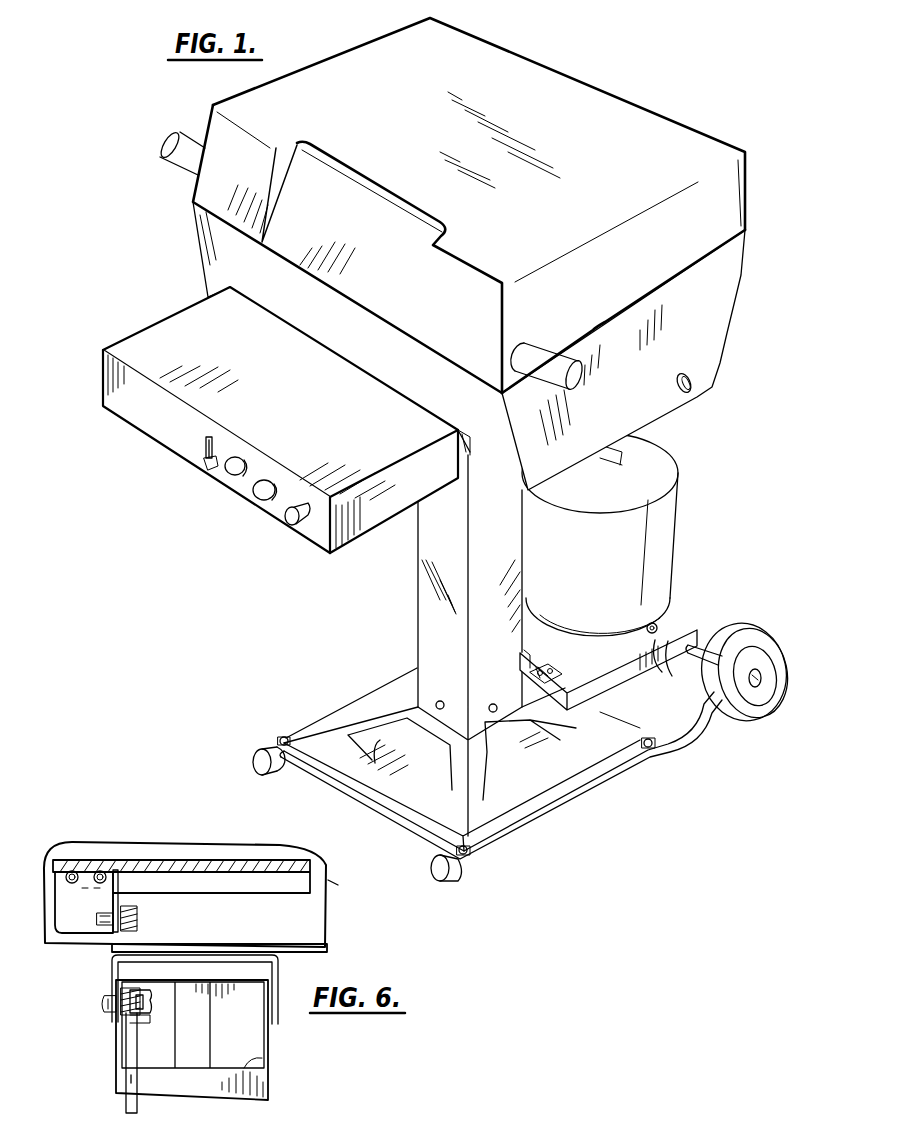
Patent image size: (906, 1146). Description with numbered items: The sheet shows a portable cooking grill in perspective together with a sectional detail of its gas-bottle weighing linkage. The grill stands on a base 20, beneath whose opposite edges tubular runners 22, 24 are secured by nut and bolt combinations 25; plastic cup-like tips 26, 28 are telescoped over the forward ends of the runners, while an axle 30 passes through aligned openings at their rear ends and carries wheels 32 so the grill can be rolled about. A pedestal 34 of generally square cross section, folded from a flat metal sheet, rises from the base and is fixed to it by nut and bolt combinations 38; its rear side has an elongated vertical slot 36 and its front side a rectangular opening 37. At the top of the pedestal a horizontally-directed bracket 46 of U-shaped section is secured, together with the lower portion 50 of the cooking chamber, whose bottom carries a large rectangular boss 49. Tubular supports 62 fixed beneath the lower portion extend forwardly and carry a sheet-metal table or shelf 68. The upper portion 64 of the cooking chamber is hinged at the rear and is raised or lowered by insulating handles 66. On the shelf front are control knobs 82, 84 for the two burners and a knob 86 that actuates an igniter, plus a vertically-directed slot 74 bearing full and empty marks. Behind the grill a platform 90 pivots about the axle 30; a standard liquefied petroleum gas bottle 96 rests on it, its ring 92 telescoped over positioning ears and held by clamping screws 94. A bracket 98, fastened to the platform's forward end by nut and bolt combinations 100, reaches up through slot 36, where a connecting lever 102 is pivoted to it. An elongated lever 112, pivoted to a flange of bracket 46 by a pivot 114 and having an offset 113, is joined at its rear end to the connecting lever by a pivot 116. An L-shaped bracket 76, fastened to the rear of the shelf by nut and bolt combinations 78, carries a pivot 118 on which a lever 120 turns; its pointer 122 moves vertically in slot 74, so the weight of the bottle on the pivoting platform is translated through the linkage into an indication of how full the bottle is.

In FIG. 1, the base 20 is at (540, 790).
In FIG. 1, the runner 22 is at (283, 773).
In FIG. 1, the runner 24 is at (515, 848).
In FIG. 1, the nut and bolt combinations 25 is at (281, 738).
In FIG. 1, the cup-like tip 26 is at (252, 768).
In FIG. 1, the cup-like tip 28 is at (433, 879).
In FIG. 1, the axle 30 is at (697, 644).
In FIG. 1, the wheels 32 is at (750, 629).
In FIG. 1, the pedestal 34 is at (418, 615).
In FIG. 6, the pedestal 34 is at (190, 1090).
In FIG. 6, the vertical slot 36 is at (205, 1026).
In FIG. 6, the rectangular opening 37 is at (256, 1066).
In FIG. 1, the nut and bolt combinations 38 is at (491, 704).
In FIG. 6, the horizontally-directed bracket 46 is at (280, 968).
In FIG. 6, the boss 49 is at (108, 955).
In FIG. 1, the lower portion of the cooking chamber 50 is at (741, 336).
In FIG. 6, the lower portion of the cooking chamber 50 is at (334, 878).
In FIG. 1, the tubular supports 62 is at (476, 472).
In FIG. 1, the upper portion of the cooking chamber 64 is at (357, 50).
In FIG. 1, the handles 66 is at (165, 150).
In FIG. 1, the table or shelf 68 is at (153, 318).
In FIG. 6, the table or shelf 68 is at (164, 855).
In FIG. 1, the vertically-directed slot 74 is at (206, 448).
In FIG. 6, the L-shaped bracket 76 is at (85, 946).
In FIG. 6, the nut and bolt combinations 78 is at (100, 871).
In FIG. 1, the control knob 82 is at (232, 478).
In FIG. 1, the control knob 84 is at (265, 503).
In FIG. 1, the knob 86 is at (290, 527).
In FIG. 1, the platform 90 is at (663, 662).
In FIG. 1, the ring 92 is at (622, 668).
In FIG. 1, the clamping screws 94 is at (656, 624).
In FIG. 1, the bottle 96 is at (670, 511).
In FIG. 1, the bracket 98 is at (526, 655).
In FIG. 1, the nut and bolt combinations 100 is at (540, 682).
In FIG. 6, the connecting lever 102 is at (126, 1110).
In FIG. 6, the elongated lever 112 is at (120, 1020).
In FIG. 6, the offset 113 is at (140, 1023).
In FIG. 6, the pivot 114 is at (104, 1005).
In FIG. 6, the pivot 116 is at (152, 1000).
In FIG. 6, the pivot 118 is at (139, 919).
In FIG. 6, the lever 120 is at (138, 930).
In FIG. 1, the pointer 122 is at (208, 462).